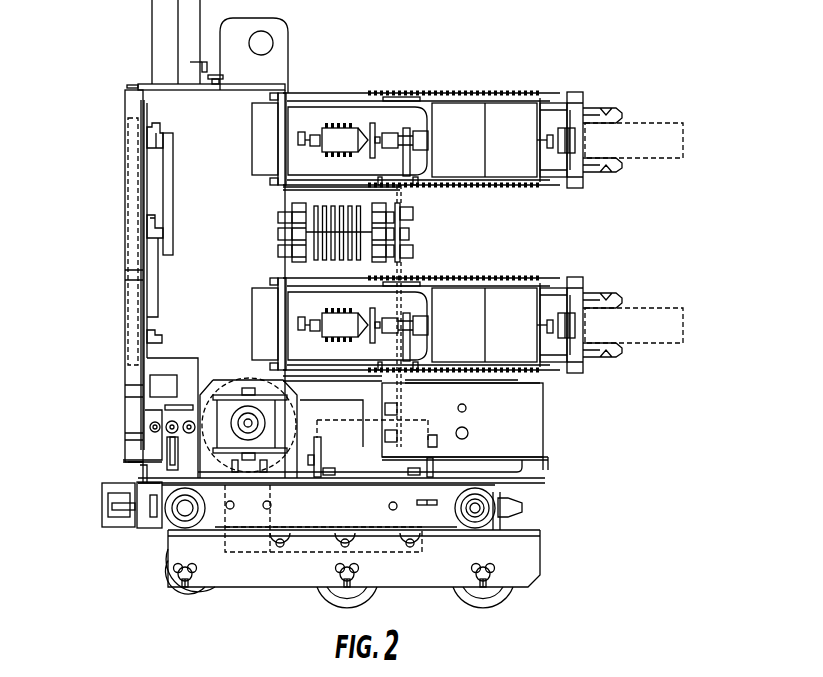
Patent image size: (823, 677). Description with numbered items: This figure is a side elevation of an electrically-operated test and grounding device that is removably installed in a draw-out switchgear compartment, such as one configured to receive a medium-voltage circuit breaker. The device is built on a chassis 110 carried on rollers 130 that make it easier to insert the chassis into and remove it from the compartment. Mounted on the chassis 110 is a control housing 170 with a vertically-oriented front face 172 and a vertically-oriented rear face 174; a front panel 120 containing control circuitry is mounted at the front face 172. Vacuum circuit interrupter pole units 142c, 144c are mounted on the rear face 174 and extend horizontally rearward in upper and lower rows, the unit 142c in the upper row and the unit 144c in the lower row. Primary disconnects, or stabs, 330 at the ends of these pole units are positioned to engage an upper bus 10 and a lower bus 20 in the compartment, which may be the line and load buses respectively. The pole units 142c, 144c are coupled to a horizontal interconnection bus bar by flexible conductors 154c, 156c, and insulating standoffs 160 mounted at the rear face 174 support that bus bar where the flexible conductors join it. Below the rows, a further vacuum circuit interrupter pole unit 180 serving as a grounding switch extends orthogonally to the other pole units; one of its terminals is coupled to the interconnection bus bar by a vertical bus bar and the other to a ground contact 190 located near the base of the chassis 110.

The upper bus 10 is at (683, 137).
The lower bus 20 is at (683, 325).
The chassis 110 is at (143, 527).
The front panel 120 is at (122, 170).
The rollers 130 is at (500, 595).
The vacuum circuit interrupter pole unit 142c is at (352, 93).
The vacuum circuit interrupter pole unit 144c is at (520, 278).
The flexible conductor 154c is at (422, 188).
The flexible conductor 156c is at (403, 272).
The insulating standoffs 160 is at (313, 203).
The control housing 170 is at (258, 84).
The front face 172 is at (148, 113).
The rear face 174 is at (284, 270).
The vacuum circuit interrupter pole unit 180 is at (249, 381).
The ground contact 190 is at (130, 462).
The primary disconnects 330 is at (618, 121).